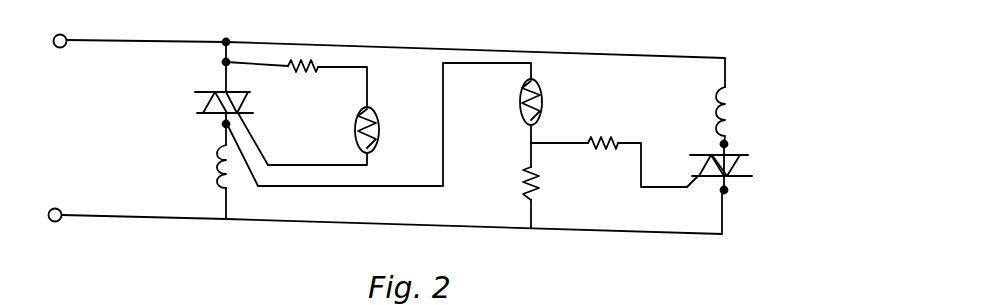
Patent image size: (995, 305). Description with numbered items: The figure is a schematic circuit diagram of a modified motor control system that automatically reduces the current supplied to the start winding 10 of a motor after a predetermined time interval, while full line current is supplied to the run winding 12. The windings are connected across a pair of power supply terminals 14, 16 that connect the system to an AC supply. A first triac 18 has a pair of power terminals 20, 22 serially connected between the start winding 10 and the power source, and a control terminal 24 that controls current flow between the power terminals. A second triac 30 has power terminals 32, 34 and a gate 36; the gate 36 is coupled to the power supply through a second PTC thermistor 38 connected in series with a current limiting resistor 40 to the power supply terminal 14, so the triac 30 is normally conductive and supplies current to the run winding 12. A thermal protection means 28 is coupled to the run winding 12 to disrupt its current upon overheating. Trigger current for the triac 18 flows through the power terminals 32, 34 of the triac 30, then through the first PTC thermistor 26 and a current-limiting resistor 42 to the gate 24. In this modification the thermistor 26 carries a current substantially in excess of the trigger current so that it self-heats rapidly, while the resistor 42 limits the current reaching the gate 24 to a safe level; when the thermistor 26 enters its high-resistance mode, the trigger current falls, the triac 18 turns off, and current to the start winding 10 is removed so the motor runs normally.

The start winding 10 is at (733, 104).
The run winding 12 is at (232, 182).
The power supply terminal 14 is at (65, 35).
The power supply terminal 16 is at (60, 209).
The triac 18 is at (745, 167).
The power terminal 20 is at (728, 142).
The power terminal 22 is at (727, 193).
The control terminal 24 is at (702, 164).
The temperature-responsive element 26 is at (543, 100).
The thermal protection means 28 is at (340, 112).
The triac 30 is at (206, 100).
The power terminal 32 is at (223, 63).
The power terminal 34 is at (222, 125).
The gate 36 is at (260, 137).
The second temperature-sensitive element 38 is at (380, 128).
The current limiting resistor 40 is at (318, 63).
The current-limiting resistor 42 is at (608, 140).